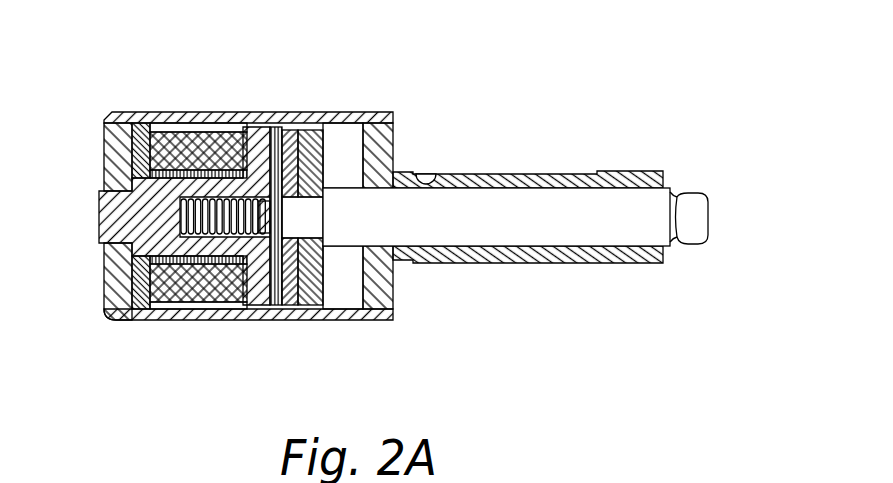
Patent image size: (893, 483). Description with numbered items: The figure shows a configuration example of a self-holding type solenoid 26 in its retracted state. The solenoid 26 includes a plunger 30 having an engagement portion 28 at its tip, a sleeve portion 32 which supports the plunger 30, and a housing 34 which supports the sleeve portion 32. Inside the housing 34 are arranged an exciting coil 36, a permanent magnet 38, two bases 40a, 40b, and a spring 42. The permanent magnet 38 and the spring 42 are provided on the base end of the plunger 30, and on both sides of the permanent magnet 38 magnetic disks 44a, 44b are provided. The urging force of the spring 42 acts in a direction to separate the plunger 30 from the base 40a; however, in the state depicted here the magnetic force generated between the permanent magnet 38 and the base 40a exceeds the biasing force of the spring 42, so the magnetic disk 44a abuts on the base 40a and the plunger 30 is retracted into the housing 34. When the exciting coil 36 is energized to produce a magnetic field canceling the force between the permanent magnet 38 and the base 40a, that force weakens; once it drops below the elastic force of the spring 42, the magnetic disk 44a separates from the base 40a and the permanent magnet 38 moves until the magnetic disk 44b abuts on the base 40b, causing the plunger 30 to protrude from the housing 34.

The solenoid 26 is at (668, 90).
The engagement portion 28 is at (695, 212).
The plunger 30 is at (564, 212).
The sleeve portion 32 is at (514, 172).
The housing 34 is at (345, 318).
The exciting coil 36 is at (204, 140).
The permanent magnet 38 is at (295, 267).
The base 40a is at (143, 218).
The base 40b is at (380, 112).
The spring 42 is at (205, 200).
The magnetic disk 44a is at (273, 280).
The magnetic disk 44b is at (305, 284).